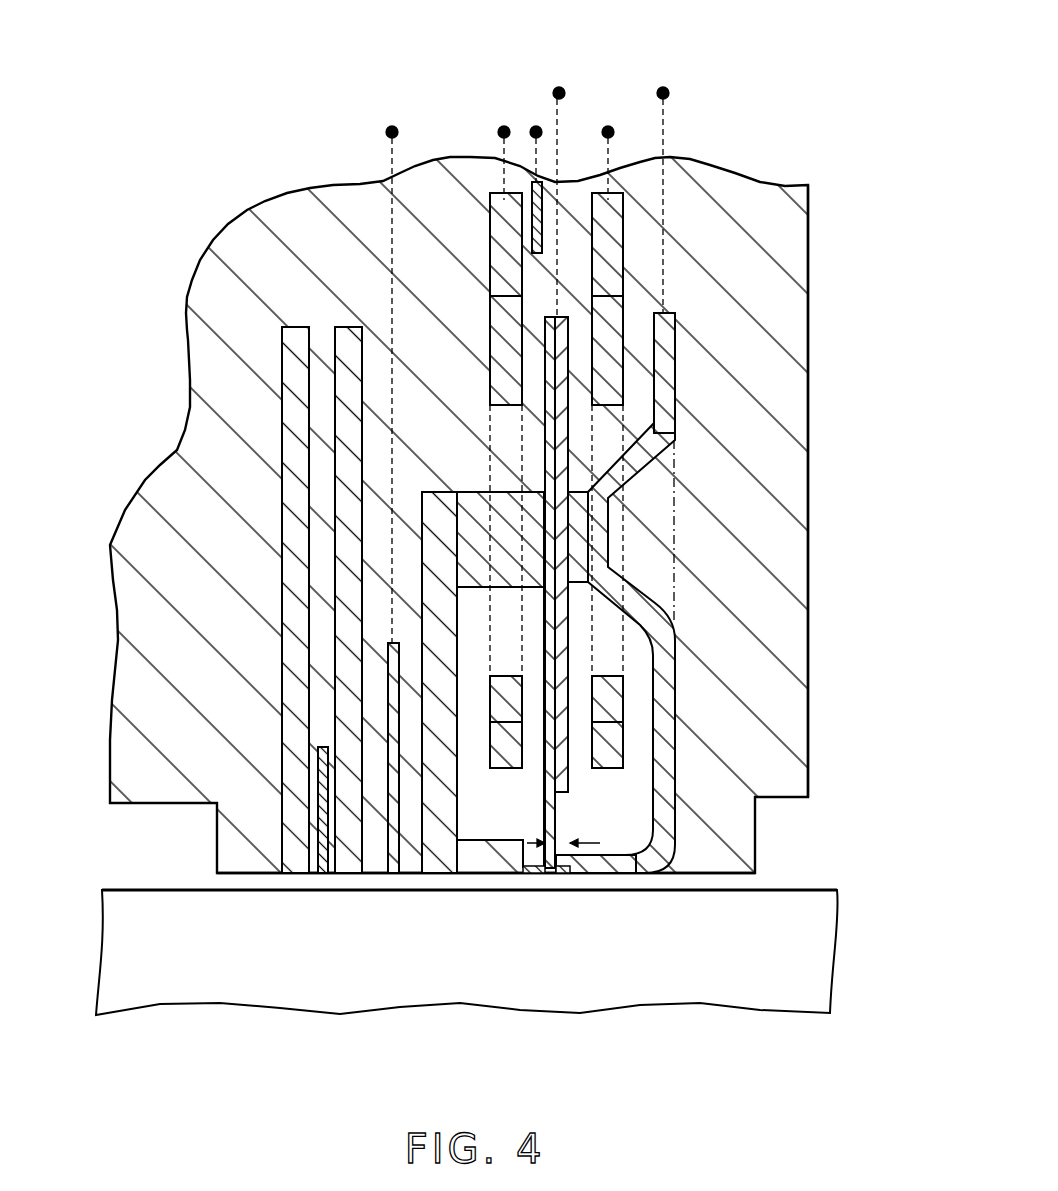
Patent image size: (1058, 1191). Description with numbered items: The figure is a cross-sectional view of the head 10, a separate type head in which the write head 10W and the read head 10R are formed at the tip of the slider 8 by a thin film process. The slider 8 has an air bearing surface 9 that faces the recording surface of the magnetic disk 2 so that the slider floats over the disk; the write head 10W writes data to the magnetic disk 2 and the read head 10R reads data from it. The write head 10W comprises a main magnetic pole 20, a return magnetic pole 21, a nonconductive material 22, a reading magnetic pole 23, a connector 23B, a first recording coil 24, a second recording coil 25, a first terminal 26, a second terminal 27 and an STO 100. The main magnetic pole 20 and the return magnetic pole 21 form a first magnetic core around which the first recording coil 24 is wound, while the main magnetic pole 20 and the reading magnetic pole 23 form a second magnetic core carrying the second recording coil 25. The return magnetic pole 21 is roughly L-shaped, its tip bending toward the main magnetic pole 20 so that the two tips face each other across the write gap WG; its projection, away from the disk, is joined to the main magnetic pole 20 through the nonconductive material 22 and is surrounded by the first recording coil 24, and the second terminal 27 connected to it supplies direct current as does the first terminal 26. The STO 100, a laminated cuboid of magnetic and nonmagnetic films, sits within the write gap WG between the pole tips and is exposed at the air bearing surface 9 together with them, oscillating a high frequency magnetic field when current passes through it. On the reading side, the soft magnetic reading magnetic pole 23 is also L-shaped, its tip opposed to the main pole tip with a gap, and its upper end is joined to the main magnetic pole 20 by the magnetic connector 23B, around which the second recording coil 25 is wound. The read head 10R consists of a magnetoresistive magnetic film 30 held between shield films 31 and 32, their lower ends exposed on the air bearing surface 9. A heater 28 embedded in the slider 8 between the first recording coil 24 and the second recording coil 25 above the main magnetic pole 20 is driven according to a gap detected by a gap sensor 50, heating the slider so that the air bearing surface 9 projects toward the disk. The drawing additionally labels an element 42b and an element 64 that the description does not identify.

The magnetic disk 2 is at (830, 953).
The slider 8 is at (198, 299).
The air bearing surface 9 is at (262, 876).
The head 10 is at (497, 536).
The read head 10R is at (318, 594).
The write head 10W is at (642, 536).
The main magnetic pole 20 is at (546, 806).
The return magnetic pole 21 is at (628, 862).
The nonconductive material 22 is at (592, 513).
The reading magnetic pole 23 is at (482, 874).
The connector 23B is at (478, 502).
The first recording coil 24 is at (613, 313).
The second recording coil 25 is at (497, 322).
The first terminal 26 is at (559, 463).
The second terminal 27 is at (663, 246).
The heater 28 is at (536, 255).
The magnetic film 30 is at (319, 810).
The shield film 31 is at (283, 445).
The shield film 32 is at (352, 332).
The insulating layer 42b is at (809, 426).
The gap sensor 50 is at (397, 874).
The side shield 64 is at (438, 497).
The STO 100 is at (560, 874).
The write gap WG is at (567, 838).